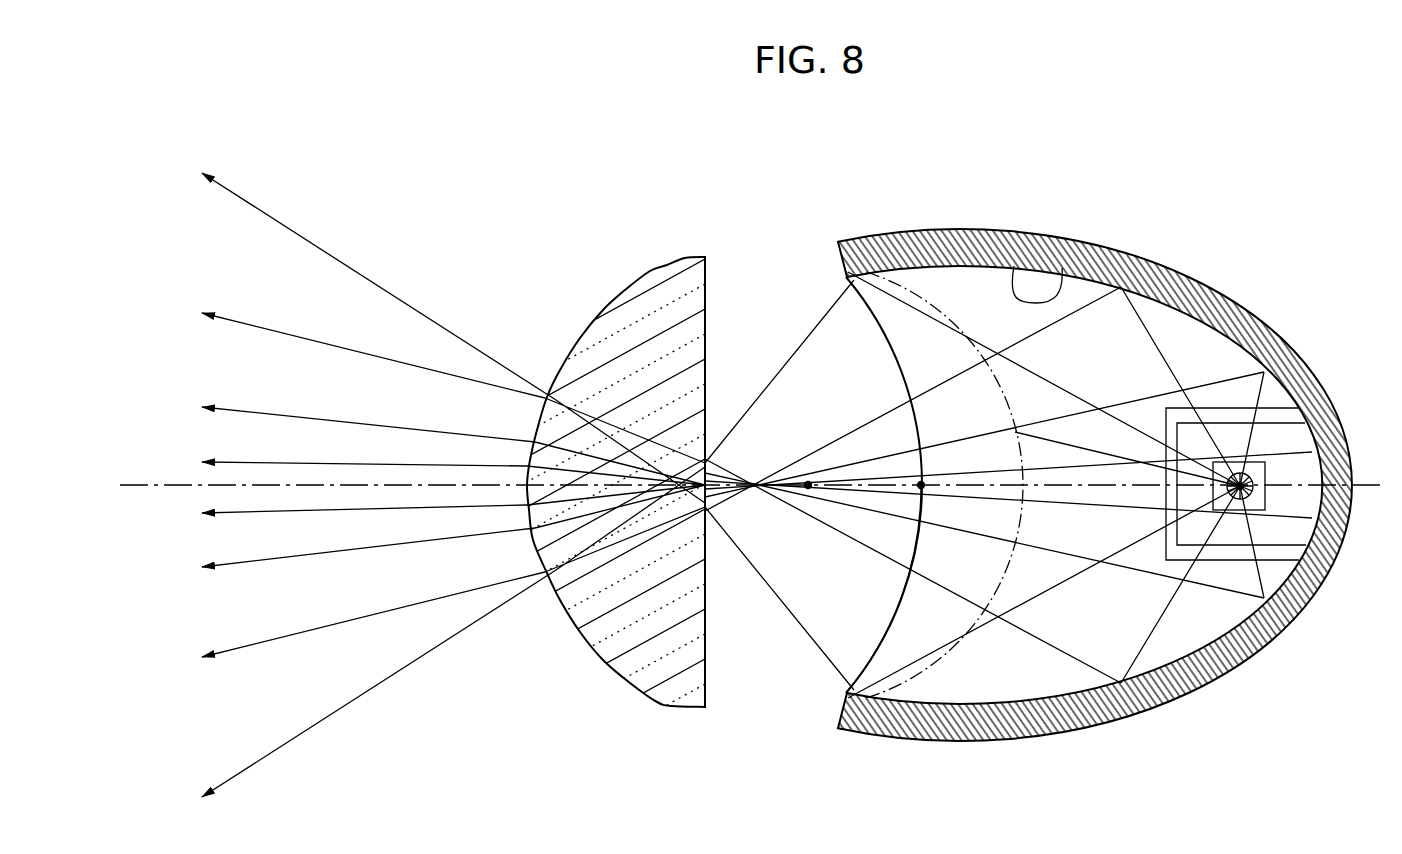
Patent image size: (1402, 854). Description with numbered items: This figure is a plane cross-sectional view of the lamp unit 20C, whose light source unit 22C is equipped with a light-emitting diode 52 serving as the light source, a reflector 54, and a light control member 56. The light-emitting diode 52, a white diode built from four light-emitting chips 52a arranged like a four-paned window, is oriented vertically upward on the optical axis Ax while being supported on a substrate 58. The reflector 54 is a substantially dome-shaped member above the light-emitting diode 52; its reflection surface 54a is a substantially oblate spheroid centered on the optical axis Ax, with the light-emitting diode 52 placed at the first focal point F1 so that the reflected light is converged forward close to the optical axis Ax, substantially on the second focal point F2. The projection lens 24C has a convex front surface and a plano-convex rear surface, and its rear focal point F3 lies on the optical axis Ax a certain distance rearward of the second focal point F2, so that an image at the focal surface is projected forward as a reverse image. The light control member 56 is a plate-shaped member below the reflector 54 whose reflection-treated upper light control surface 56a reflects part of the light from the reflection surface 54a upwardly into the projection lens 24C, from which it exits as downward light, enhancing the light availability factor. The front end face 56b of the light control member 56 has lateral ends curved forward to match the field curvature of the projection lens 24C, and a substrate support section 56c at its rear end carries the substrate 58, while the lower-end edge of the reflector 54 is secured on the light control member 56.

The lamp unit 20C is at (1141, 171).
The light source unit 22C is at (813, 217).
The projection lens 24C is at (626, 284).
The light-emitting diode 52 is at (1266, 492).
The light-emitting chips 52a is at (1258, 456).
The reflector 54 is at (1187, 273).
The reflection surface 54a is at (1014, 266).
The light control member 56 is at (878, 333).
The light control surface 56a is at (940, 540).
The front end face 56b is at (893, 610).
The substrate support section 56c is at (1228, 417).
The substrate 58 is at (1274, 416).
The first focal point F1 is at (1245, 515).
The second focal point F2 is at (808, 484).
The rear focal point F3 is at (922, 484).
The optical axis Ax is at (200, 486).